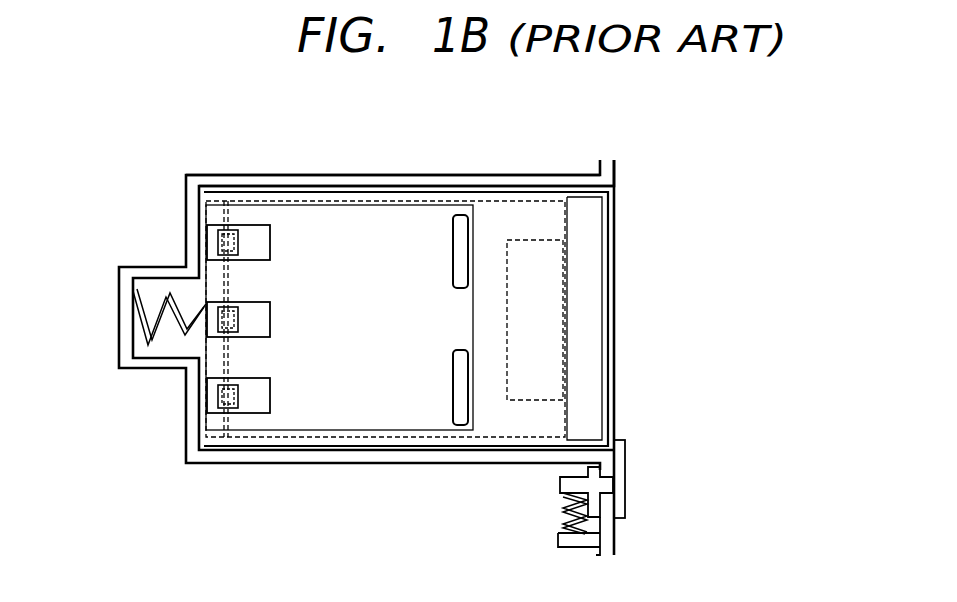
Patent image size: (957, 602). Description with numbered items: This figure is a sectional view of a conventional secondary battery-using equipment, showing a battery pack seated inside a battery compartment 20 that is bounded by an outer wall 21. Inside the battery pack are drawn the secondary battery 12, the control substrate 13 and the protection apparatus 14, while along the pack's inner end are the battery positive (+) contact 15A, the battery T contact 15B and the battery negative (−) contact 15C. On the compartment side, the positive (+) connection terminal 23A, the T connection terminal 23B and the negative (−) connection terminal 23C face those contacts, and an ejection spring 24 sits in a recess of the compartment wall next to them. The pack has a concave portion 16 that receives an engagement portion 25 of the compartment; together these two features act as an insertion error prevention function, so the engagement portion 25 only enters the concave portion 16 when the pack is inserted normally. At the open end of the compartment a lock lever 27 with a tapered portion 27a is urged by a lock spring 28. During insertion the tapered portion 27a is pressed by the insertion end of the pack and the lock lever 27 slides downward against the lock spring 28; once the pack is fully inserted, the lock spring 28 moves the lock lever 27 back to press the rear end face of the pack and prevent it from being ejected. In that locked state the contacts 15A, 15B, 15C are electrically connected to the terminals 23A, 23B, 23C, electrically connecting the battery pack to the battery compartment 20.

The secondary battery 12 is at (587, 412).
The control substrate 13 is at (218, 202).
The protection apparatus 14 is at (550, 255).
The battery positive (+) contact 15A is at (207, 240).
The battery T contact 15B is at (203, 330).
The battery negative (−) contact 15C is at (207, 397).
The concave portion 16 is at (363, 232).
The battery compartment 20 is at (398, 325).
The outer wall 21 is at (483, 185).
The positive (+) connection terminal 23A is at (238, 242).
The T connection terminal 23B is at (238, 318).
The negative (−) connection terminal 23C is at (238, 396).
The ejection spring 24 is at (138, 337).
The engagement portion 25 is at (460, 250).
The lock lever 27 is at (618, 482).
The tapered portion 27a is at (625, 442).
The lock spring 28 is at (562, 508).